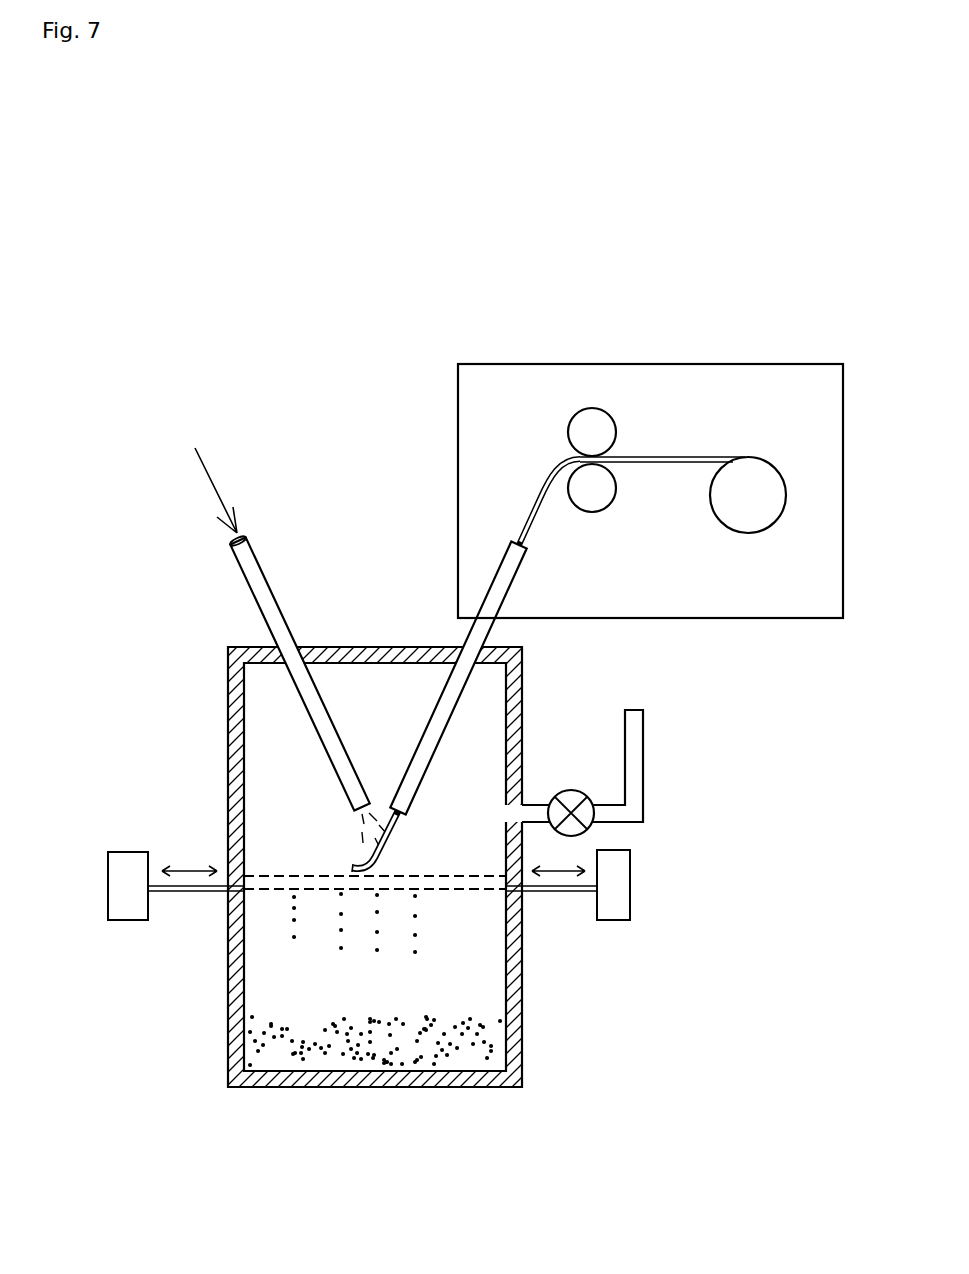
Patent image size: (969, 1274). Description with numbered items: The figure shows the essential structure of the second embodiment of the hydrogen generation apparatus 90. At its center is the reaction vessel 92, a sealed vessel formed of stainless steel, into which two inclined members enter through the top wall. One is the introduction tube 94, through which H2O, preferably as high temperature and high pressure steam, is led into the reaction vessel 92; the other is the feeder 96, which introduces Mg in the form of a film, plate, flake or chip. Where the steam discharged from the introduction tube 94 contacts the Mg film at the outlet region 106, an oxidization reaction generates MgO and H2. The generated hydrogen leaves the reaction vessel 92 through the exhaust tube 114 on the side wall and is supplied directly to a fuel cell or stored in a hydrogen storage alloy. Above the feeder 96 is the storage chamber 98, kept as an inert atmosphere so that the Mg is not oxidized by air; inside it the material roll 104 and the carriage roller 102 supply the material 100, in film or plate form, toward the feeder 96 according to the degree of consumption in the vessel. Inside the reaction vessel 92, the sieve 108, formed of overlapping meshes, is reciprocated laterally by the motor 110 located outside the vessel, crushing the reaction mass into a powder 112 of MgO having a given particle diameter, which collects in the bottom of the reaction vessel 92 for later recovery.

The hydrogen generation apparatus 90 is at (228, 380).
The reaction vessel 92 is at (512, 738).
The introduction tube 94 is at (253, 574).
The feeder 96 is at (480, 633).
The storage chamber 98 is at (757, 610).
The material 100 is at (550, 472).
The carriage roller 102 is at (587, 503).
The material roll 104 is at (772, 477).
The nozzle 106 is at (365, 827).
The sieve 108 is at (260, 877).
The motor 110 is at (607, 903).
The powder 112 is at (315, 1042).
The exhaust tube 114 is at (635, 762).